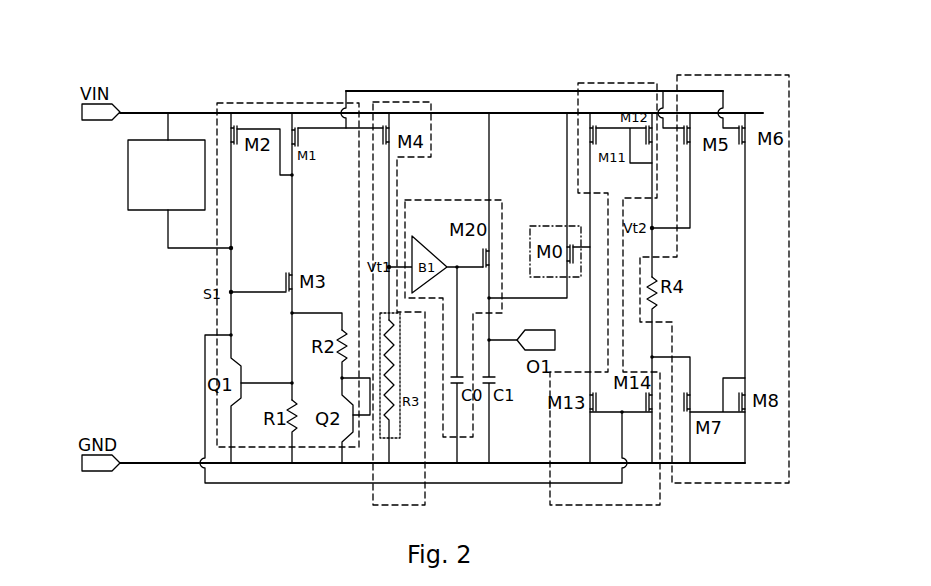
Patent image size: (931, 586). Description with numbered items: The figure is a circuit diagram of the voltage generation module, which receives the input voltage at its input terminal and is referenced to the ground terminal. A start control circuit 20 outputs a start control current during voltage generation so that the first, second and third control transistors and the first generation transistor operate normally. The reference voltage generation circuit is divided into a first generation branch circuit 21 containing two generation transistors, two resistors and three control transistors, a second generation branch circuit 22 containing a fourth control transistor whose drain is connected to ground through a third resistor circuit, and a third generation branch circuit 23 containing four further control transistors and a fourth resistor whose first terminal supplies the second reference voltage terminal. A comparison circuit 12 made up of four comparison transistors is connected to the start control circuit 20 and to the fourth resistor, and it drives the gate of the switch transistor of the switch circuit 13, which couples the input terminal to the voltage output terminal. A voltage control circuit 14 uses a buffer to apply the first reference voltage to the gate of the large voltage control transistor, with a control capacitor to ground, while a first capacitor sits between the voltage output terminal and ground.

The comparison circuit 12 is at (640, 83).
The switch circuit 13 is at (547, 226).
The voltage control circuit 14 is at (470, 200).
The start control circuit 20 is at (128, 172).
The first generation branch circuit 21 is at (280, 103).
The second generation branch circuit 22 is at (453, 136).
The third generation branch circuit 23 is at (730, 75).